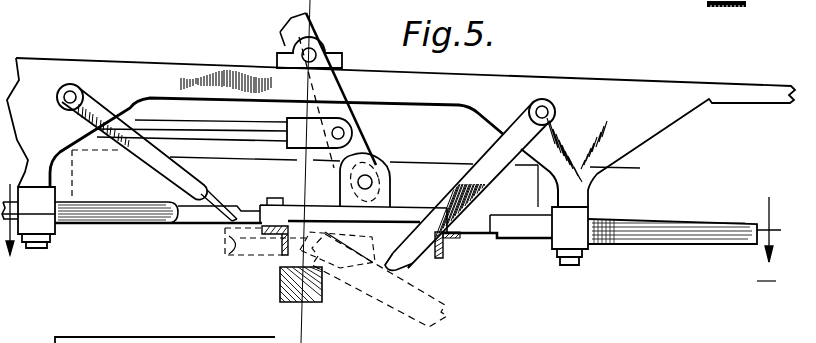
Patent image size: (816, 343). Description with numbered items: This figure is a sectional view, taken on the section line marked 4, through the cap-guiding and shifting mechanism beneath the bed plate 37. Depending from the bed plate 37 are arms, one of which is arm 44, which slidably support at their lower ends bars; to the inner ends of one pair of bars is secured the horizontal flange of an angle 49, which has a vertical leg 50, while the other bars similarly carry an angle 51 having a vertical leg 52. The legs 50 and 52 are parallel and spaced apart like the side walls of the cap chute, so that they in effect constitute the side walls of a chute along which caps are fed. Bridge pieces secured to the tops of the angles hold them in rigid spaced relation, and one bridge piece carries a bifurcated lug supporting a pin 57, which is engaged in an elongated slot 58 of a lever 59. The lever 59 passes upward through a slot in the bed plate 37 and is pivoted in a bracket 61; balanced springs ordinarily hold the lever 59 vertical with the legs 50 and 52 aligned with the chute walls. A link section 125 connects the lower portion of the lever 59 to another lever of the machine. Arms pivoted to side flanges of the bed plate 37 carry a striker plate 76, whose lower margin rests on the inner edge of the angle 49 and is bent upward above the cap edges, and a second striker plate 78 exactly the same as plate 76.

The bed plate 37 is at (612, 85).
The arm 44 is at (86, 150).
The angle 49 is at (462, 220).
The vertical leg 50 is at (445, 252).
The angle 51 is at (260, 232).
The vertical leg 52 is at (283, 252).
The pin 57 is at (365, 181).
The elongated slot 58 is at (389, 195).
The lever 59 is at (310, 32).
The bracket 61 is at (276, 56).
The striker plate 76 is at (409, 260).
The striker plate 78 is at (172, 204).
The link section 125 is at (253, 114).
The section line 4- 4 is at (392, 234).